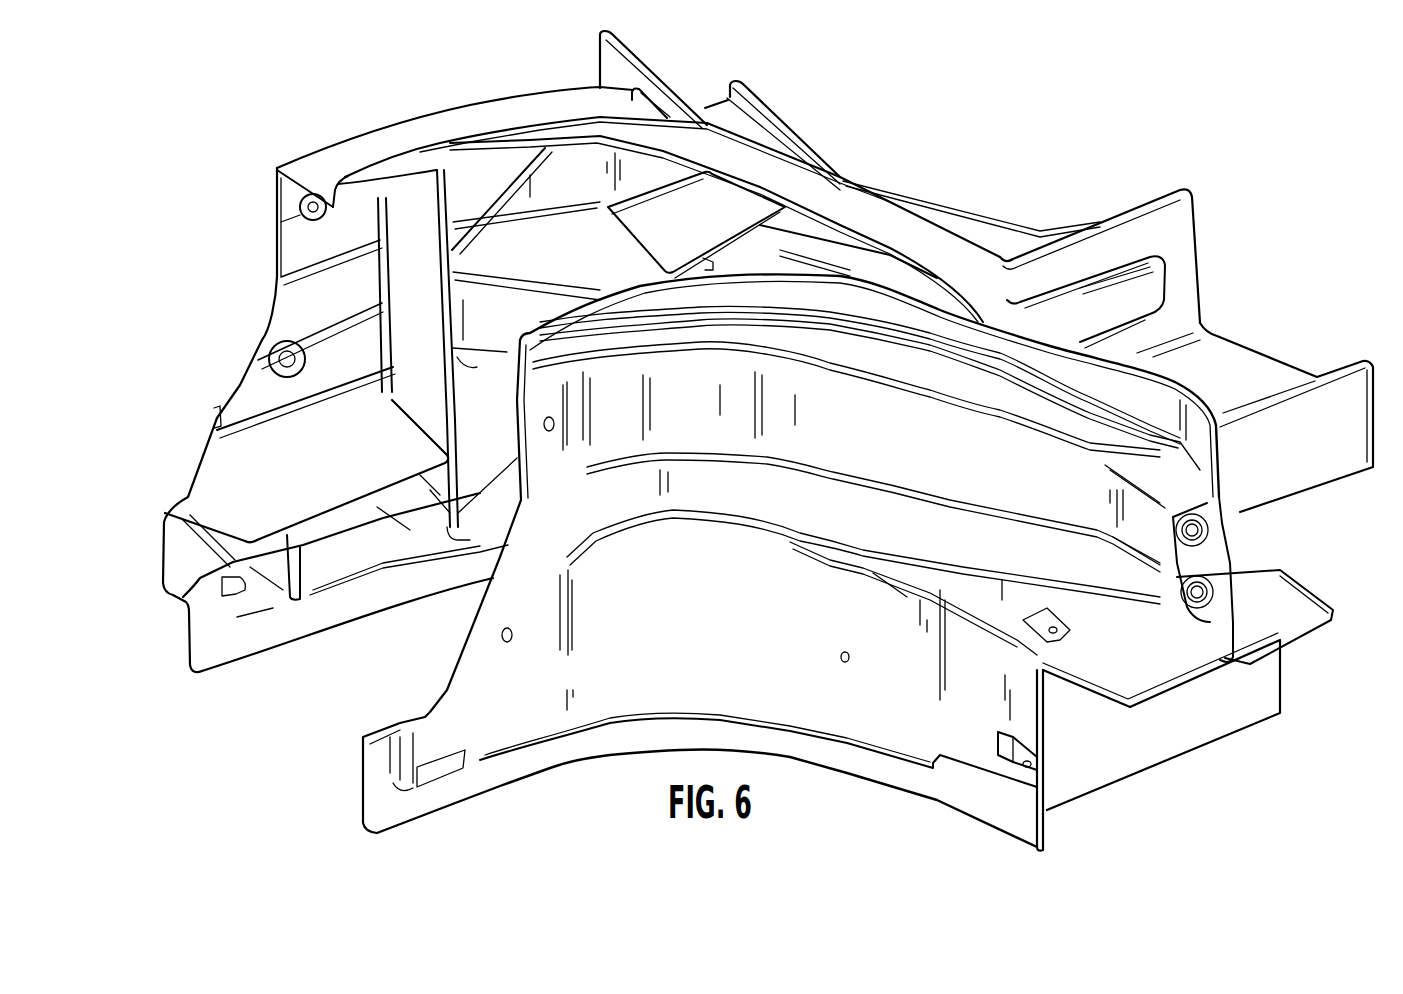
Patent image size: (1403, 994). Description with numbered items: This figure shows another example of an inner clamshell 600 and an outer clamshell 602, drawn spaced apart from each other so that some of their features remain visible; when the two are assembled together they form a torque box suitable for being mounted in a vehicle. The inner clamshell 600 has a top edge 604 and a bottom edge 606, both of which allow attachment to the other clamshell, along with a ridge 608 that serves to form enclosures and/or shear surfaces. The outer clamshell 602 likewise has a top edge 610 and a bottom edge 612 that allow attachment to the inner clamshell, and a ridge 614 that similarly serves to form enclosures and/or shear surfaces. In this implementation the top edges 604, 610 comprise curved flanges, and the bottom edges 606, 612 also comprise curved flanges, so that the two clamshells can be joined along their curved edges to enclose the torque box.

The inner clamshell 600 is at (333, 137).
The outer clamshell 602 is at (1190, 765).
The top edge 604 is at (511, 116).
The bottom edge 606 is at (383, 598).
The ridge 608 is at (500, 312).
The top edge 610 is at (985, 328).
The bottom edge 612 is at (850, 775).
The ridge 614 is at (745, 492).